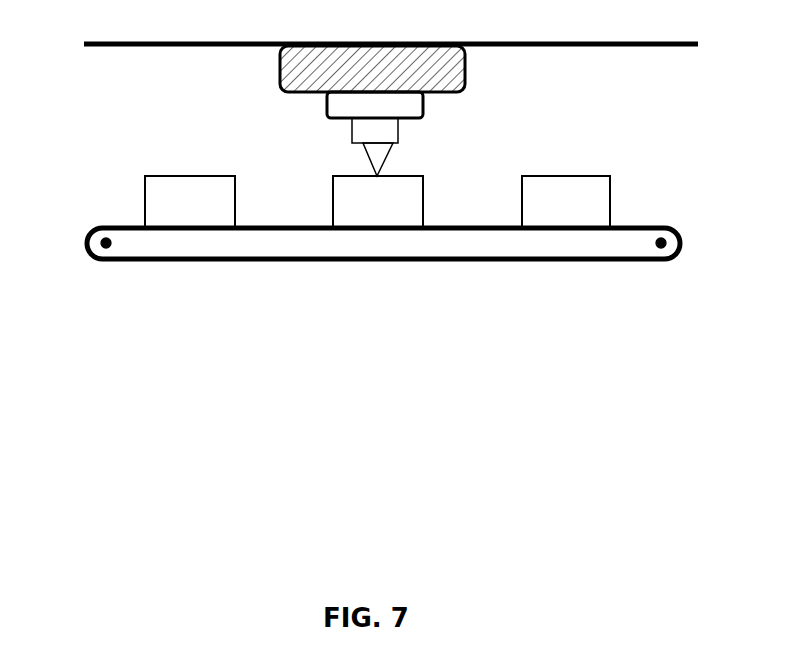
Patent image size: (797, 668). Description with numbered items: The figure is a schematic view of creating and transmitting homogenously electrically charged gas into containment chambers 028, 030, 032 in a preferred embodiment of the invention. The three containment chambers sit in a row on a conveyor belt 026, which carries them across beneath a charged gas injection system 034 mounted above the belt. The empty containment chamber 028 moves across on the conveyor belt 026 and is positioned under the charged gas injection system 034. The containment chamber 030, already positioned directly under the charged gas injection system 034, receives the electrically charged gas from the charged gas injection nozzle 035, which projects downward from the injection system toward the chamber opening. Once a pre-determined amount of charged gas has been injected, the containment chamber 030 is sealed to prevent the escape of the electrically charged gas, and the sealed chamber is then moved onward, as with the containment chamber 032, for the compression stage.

The conveyor belt 026 is at (155, 262).
The containment chamber 028 is at (145, 203).
The containment chamber 030 is at (333, 203).
The containment chamber 032 is at (610, 202).
The charged gas injection system 034 is at (424, 130).
The charged gas injection nozzle 035 is at (368, 163).